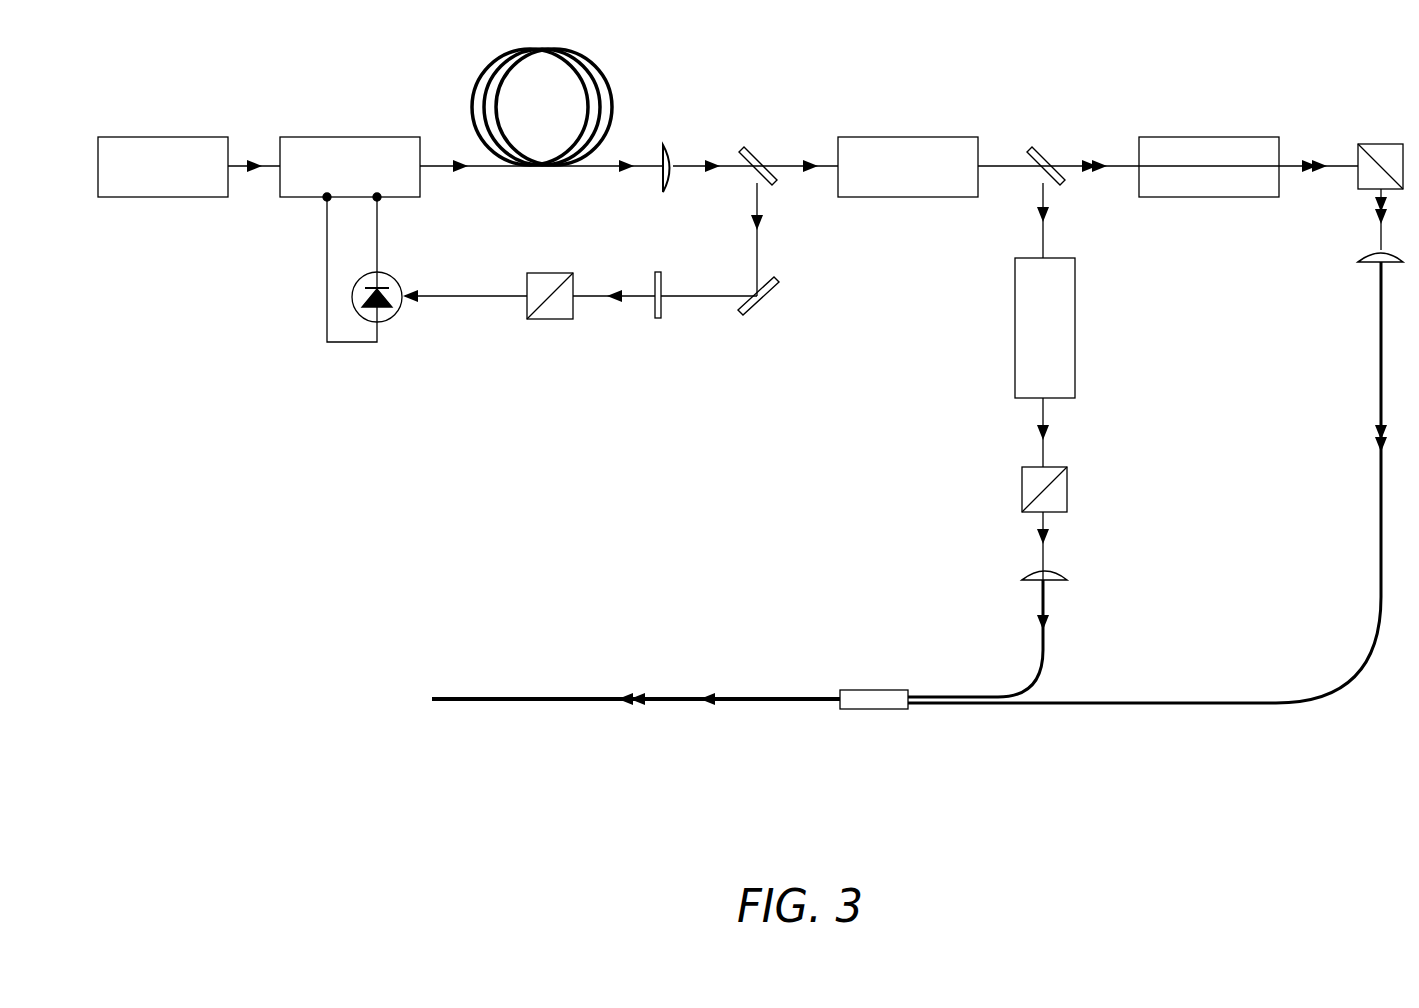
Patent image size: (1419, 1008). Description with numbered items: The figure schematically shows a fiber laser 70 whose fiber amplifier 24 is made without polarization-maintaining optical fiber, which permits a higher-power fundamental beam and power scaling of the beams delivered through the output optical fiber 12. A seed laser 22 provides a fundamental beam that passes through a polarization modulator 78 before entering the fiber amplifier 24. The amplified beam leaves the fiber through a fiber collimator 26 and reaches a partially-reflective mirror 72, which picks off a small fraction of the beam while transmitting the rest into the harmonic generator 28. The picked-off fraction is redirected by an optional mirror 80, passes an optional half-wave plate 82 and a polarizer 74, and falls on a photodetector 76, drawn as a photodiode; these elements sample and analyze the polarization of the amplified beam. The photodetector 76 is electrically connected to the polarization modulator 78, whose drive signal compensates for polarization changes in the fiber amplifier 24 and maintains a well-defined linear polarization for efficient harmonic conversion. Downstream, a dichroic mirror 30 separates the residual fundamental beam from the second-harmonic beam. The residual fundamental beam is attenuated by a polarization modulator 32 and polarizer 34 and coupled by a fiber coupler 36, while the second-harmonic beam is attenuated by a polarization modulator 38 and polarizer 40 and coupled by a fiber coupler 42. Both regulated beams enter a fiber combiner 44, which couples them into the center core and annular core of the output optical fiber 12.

The fiber laser 70 is at (225, 497).
The seed laser 22 is at (123, 140).
The polarization modulator 78 is at (307, 140).
The fiber amplifier 24 is at (590, 60).
The fiber collimator 26 is at (666, 142).
The partially-reflective mirror 72 is at (745, 142).
The harmonic generator 28 is at (855, 140).
The dichroic mirror 30 is at (1032, 143).
The polarization modulator 38 is at (1260, 140).
The polarizer 40 is at (1392, 147).
The fiber coupler 42 is at (1356, 260).
The polarization modulator 32 is at (1020, 284).
The polarizer 34 is at (1025, 477).
The fiber coupler 36 is at (1022, 577).
The fiber combiner 44 is at (893, 704).
The output optical fiber 12 is at (530, 705).
The mirror 80 is at (742, 316).
The half-wave plate 82 is at (658, 320).
The polarizer 74 is at (572, 311).
The photodetector 76 is at (395, 318).